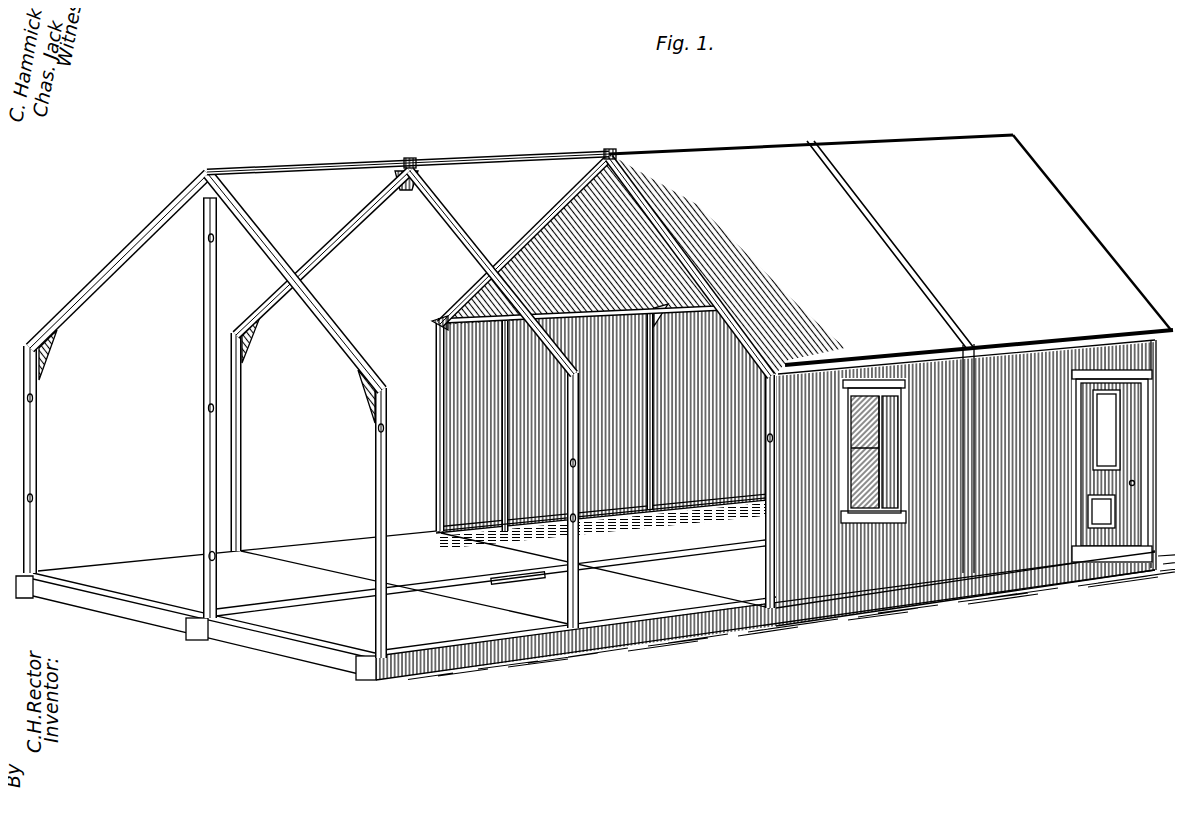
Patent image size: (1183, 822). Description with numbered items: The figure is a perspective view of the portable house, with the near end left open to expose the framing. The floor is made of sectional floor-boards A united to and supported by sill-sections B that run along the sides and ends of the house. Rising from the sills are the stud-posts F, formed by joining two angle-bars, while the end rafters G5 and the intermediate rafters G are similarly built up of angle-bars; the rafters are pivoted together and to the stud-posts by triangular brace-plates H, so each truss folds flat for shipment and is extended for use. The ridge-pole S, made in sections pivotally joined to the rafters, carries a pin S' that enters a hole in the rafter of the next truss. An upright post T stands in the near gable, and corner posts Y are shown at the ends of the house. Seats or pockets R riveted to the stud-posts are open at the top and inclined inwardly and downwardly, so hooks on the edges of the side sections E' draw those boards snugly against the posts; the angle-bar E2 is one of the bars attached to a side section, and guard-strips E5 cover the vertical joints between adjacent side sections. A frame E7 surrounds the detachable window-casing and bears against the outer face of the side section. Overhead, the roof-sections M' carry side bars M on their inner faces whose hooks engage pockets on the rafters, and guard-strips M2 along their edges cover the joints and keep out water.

The ridge-pole S is at (408, 153).
The pin S' is at (494, 144).
The rafters G is at (405, 272).
The end rafters G5 is at (206, 282).
The brace-plates H is at (400, 184).
The side bars M is at (642, 265).
The roof-sections M' is at (891, 250).
The guard-strips M2 is at (881, 215).
The center post T is at (196, 408).
The stud-posts F is at (582, 590).
The frame E7 is at (866, 371).
The side sections E' is at (791, 502).
The corner posts Y is at (214, 494).
The pockets R is at (196, 400).
The sill-sections B is at (112, 544).
The angle-bar E2 is at (428, 514).
The sectional floor-boards A is at (208, 555).
The guard-strips E5 is at (960, 564).